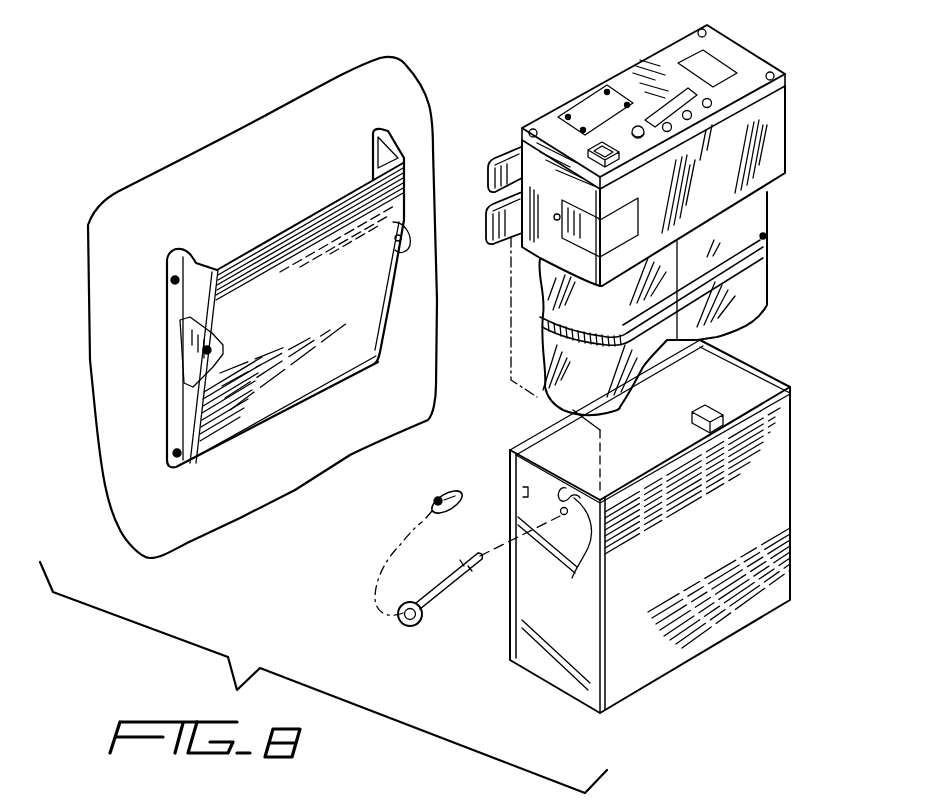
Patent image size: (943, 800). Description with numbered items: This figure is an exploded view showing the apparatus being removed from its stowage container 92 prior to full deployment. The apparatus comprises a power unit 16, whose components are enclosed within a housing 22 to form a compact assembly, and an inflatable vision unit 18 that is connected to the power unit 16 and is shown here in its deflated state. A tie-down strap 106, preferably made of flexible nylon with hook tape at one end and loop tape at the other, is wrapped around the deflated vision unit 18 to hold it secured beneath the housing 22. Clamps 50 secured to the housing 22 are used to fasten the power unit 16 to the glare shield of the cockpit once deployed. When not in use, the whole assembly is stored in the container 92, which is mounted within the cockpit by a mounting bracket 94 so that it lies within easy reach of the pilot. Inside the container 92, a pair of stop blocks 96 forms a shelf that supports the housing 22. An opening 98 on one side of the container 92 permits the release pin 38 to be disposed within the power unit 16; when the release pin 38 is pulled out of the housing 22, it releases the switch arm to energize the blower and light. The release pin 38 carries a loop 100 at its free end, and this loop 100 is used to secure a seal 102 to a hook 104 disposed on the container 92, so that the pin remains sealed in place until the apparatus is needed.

The power unit 16 is at (787, 130).
The housing 22 is at (786, 171).
The clamps 50 is at (497, 146).
The inflatable vision unit 18 is at (770, 282).
The tie-down strap 106 is at (765, 234).
The stowage container 92 is at (794, 447).
The mounting bracket 94 is at (298, 214).
The stop blocks 96 is at (713, 410).
The opening 98 is at (564, 516).
The loop 100 is at (421, 627).
The seal 102 is at (428, 506).
The hook 104 is at (606, 555).
The release pin 38 is at (469, 568).